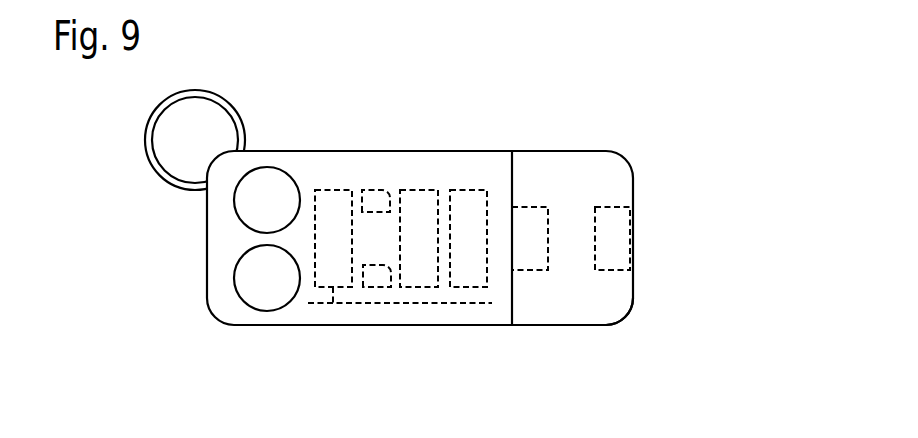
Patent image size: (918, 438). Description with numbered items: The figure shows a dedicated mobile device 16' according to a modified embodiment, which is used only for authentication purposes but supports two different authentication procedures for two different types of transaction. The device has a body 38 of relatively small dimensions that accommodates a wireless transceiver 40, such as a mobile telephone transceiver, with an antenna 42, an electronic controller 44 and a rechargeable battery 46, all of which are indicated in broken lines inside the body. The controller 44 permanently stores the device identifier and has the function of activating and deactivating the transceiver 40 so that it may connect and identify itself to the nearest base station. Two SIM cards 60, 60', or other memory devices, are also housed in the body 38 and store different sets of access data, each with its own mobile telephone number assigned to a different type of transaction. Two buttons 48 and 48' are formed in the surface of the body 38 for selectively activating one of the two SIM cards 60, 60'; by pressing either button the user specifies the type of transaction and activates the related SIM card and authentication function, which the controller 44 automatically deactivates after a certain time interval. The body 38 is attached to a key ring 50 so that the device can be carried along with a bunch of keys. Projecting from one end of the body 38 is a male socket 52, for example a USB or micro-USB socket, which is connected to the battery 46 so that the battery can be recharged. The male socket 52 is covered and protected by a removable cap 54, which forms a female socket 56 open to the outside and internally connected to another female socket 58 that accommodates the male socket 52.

The mobile device 16' is at (733, 129).
The body 38 is at (207, 257).
The wireless transceiver 40 is at (332, 186).
The antenna 42 is at (457, 305).
The electronic controller 44 is at (417, 185).
The rechargeable battery 46 is at (472, 185).
The button 48 is at (267, 147).
The button 48' is at (266, 332).
The key ring 50 is at (147, 145).
The male socket 52 is at (530, 262).
The removable cap 54 is at (620, 302).
The female socket 56 is at (622, 233).
The female socket 58 is at (530, 205).
The SIM card 60 is at (381, 159).
The SIM card 60' is at (374, 319).